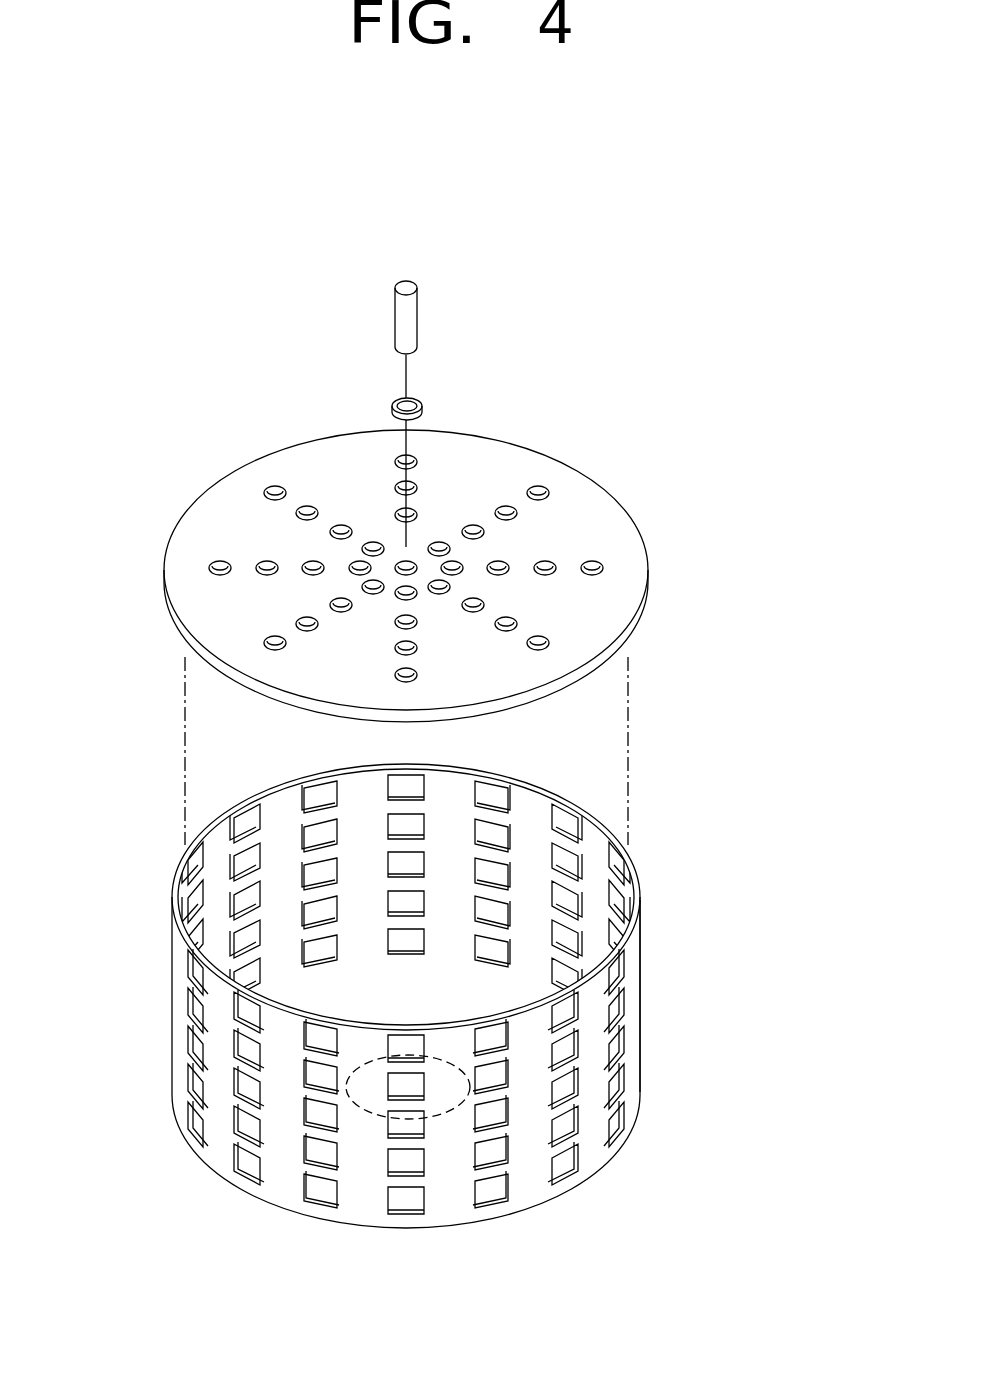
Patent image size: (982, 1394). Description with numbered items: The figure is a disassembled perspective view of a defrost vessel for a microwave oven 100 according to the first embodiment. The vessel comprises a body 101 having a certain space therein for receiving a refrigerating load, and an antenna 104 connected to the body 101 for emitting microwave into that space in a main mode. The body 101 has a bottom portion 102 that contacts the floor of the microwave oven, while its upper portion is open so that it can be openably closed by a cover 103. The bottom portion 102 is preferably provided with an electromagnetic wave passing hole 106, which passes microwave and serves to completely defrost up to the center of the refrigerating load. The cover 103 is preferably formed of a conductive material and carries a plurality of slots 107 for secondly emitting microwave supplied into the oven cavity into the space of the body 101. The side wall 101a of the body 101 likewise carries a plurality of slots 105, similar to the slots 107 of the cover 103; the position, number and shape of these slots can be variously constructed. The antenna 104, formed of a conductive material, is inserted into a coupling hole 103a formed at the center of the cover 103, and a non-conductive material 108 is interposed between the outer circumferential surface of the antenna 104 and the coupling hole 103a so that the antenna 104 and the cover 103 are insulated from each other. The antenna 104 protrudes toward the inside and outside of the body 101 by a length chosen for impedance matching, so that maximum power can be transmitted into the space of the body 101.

The defrost vessel for a microwave oven 100 is at (740, 618).
The body 101 is at (645, 937).
The side wall 101a is at (633, 993).
The bottom portion 102 is at (333, 1005).
The cover 103 is at (613, 490).
The coupling hole 103a is at (408, 562).
The antenna 104 is at (398, 307).
The slots 105 is at (573, 1085).
The electromagnetic wave passing hole 106 is at (437, 1108).
The slots 107 is at (275, 487).
The non-conductive material 108 is at (392, 403).